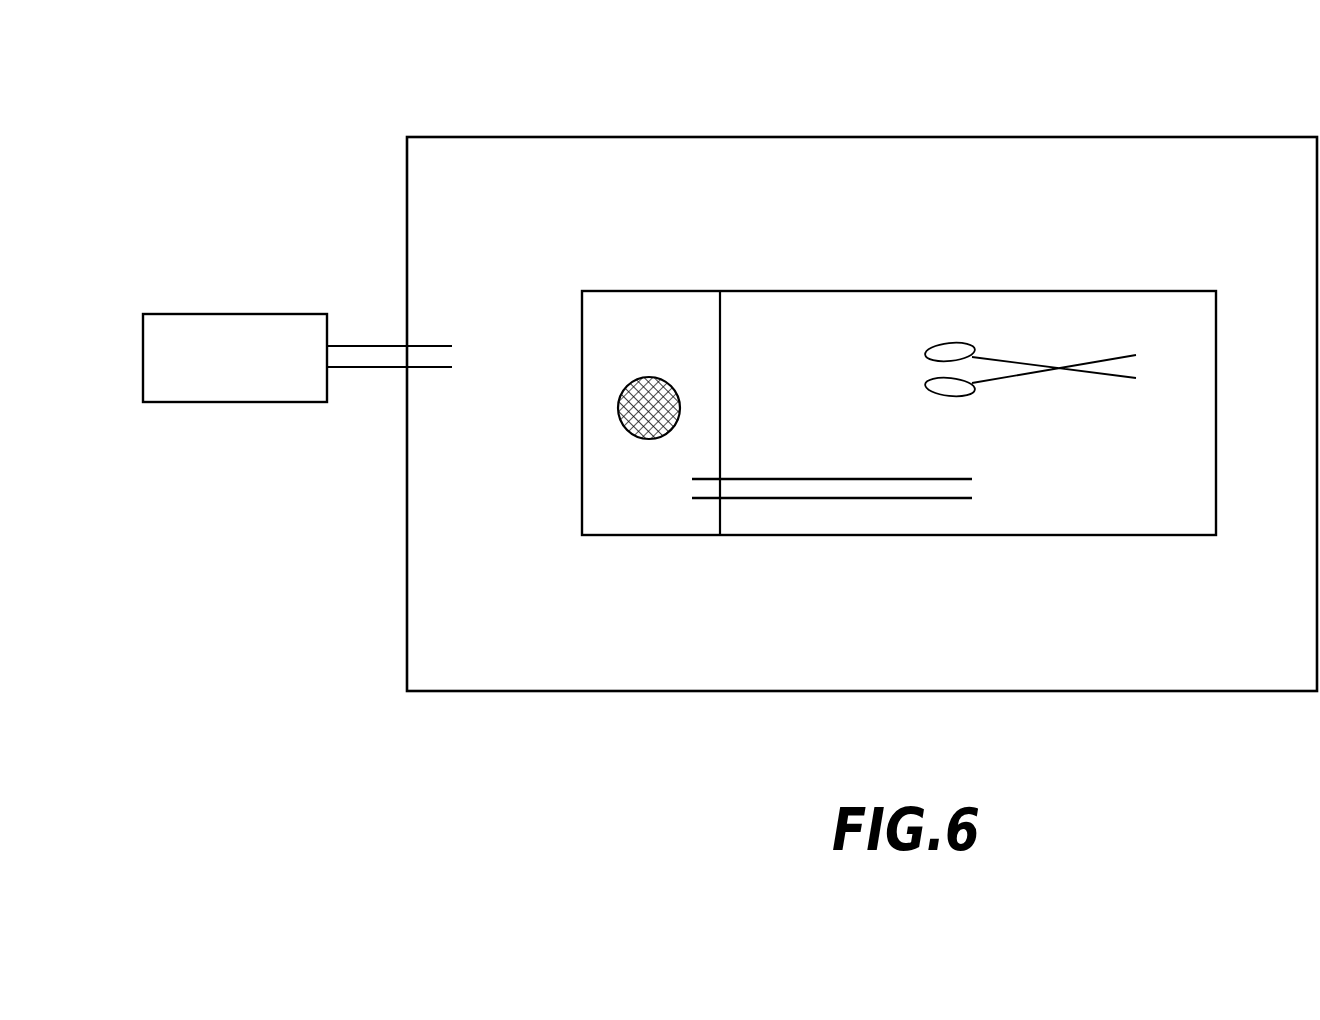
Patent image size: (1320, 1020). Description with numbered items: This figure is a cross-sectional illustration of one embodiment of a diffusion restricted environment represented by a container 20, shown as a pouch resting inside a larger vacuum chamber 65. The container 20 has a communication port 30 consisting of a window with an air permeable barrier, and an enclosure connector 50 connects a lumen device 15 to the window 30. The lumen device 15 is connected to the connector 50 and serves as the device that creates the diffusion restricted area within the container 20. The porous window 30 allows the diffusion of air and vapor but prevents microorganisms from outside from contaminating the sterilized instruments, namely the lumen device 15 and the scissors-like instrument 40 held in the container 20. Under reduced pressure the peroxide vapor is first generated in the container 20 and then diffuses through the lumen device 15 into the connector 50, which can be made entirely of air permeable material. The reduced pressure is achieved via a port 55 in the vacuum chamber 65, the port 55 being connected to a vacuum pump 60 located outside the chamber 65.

The vacuum chamber 65 is at (1172, 137).
The vacuum pump 60 is at (212, 314).
The port 55 is at (442, 346).
The container 20 is at (1120, 291).
The enclosure connector 50 is at (628, 347).
The communication port 30 is at (617, 425).
The lumen device 15 is at (870, 498).
The instrument 40 is at (1028, 382).